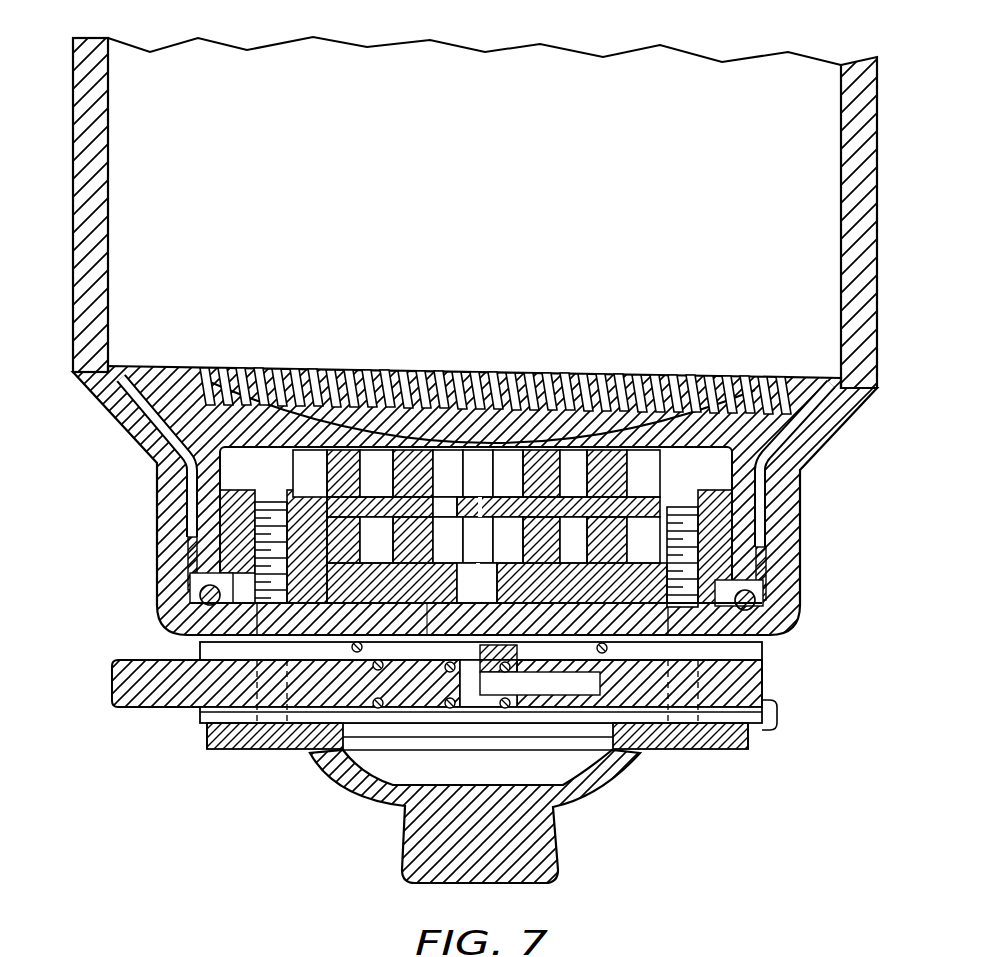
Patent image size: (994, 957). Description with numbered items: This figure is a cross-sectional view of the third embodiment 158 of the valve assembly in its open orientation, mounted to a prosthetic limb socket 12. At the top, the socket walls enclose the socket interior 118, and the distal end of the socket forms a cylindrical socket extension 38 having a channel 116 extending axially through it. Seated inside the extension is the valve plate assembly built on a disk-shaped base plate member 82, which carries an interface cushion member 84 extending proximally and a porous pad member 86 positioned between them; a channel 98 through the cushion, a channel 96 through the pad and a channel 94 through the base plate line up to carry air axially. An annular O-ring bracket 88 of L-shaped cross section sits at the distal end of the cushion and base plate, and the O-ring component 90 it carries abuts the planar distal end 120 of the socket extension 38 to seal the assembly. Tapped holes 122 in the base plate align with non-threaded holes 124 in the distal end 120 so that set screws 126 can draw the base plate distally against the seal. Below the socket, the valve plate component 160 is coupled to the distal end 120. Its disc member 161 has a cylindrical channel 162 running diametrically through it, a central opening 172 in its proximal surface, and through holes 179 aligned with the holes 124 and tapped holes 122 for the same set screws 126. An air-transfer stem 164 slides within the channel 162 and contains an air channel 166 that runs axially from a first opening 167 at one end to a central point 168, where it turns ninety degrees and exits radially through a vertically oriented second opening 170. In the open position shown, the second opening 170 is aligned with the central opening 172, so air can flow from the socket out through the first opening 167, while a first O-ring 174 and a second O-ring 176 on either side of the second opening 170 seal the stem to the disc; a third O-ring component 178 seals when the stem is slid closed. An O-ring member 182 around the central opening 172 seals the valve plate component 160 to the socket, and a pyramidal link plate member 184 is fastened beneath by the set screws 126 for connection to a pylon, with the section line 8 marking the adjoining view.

The prosthetic limb socket 12 is at (95, 178).
The socket interior 118 is at (420, 158).
The interface cushion member 84 is at (495, 364).
The porous pad member 86 is at (350, 470).
The channel through interface cushion 98 is at (478, 440).
The channel through porous pad 96 is at (478, 517).
The channel through base plate 94 is at (478, 572).
The socket extension 38 is at (163, 505).
The base plate member 82 is at (708, 514).
The O-ring bracket 88 is at (196, 553).
The O-ring component 90 is at (190, 602).
The distal end of socket extension 120 is at (172, 624).
The tapped holes 122 is at (270, 550).
The non-threaded holes 124 is at (297, 604).
The channel through socket extension 116 is at (428, 645).
The central opening 172 is at (487, 648).
The third embodiment 158 is at (851, 538).
The through holes 179 is at (810, 614).
The valve plate component 160 is at (450, 740).
The air-transfer stem 164 is at (140, 700).
The cylindrical channel 162 is at (200, 723).
The second O-ring 176 is at (324, 755).
The air channel 166 is at (656, 750).
The disc member 161 is at (245, 752).
The first opening 167 is at (764, 702).
The central point 168 is at (478, 740).
The second opening 170 is at (373, 742).
The first O-ring 174 is at (538, 730).
The O-ring member 182 is at (603, 653).
The third O-ring component 178 is at (295, 750).
The set screws 126 is at (208, 760).
The pyramidal link plate member 184 is at (420, 868).
The section line 8- 8 is at (432, 735).